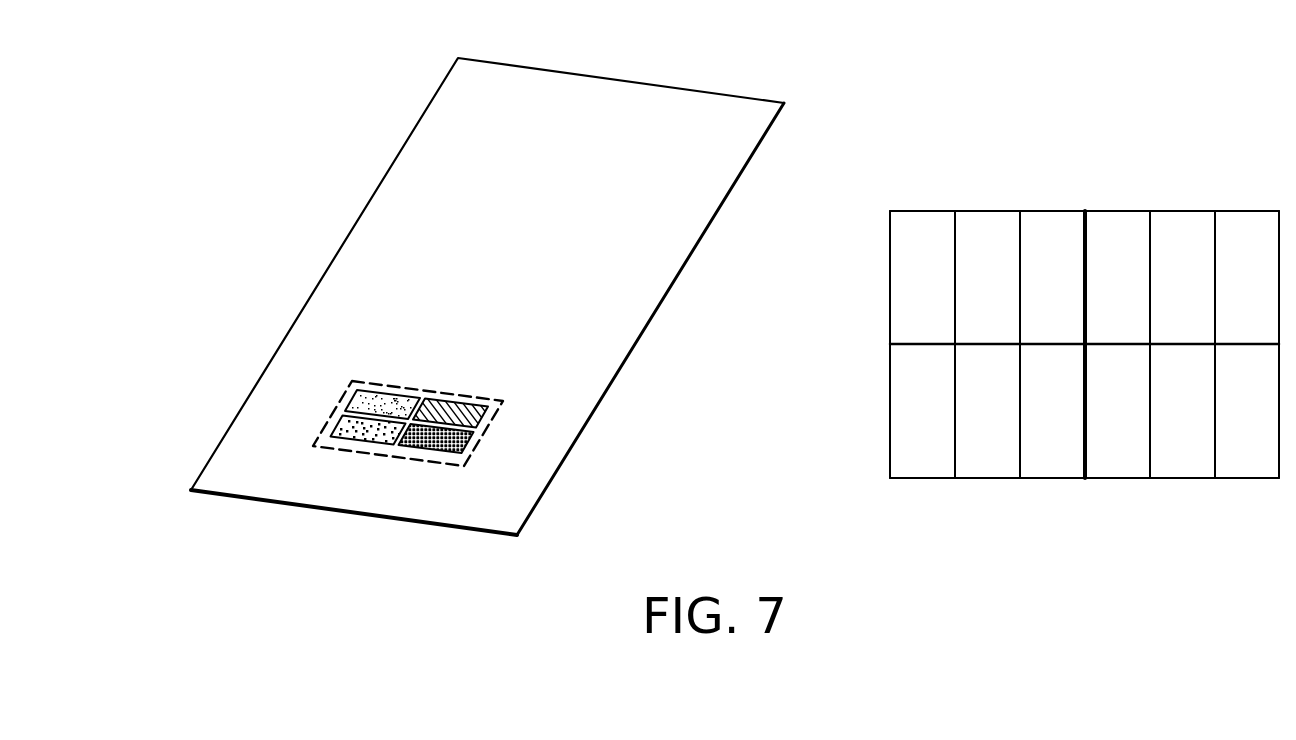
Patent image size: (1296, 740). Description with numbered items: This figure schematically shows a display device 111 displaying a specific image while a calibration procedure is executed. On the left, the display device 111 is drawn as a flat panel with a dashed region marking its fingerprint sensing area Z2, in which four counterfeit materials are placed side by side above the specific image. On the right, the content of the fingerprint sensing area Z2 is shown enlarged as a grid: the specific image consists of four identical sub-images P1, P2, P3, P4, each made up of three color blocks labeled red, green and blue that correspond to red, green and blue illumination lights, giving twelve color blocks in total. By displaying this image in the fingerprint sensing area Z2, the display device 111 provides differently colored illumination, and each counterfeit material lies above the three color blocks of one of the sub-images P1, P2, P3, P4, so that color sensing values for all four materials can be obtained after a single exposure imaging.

The display device 111 is at (385, 177).
The fingerprint sensing area Z2 is at (387, 380).
The sub-image P1 is at (988, 222).
The sub-image P2 is at (1183, 222).
The sub-image P3 is at (987, 467).
The sub-image P4 is at (1182, 467).